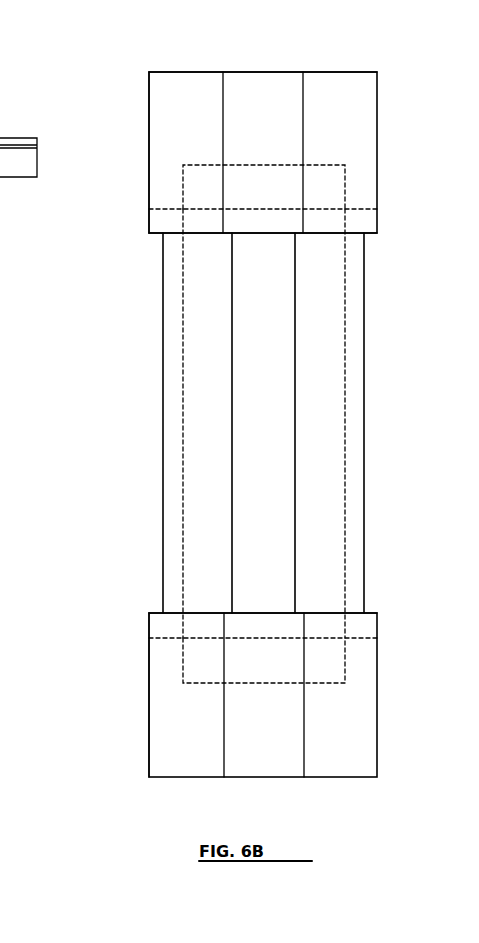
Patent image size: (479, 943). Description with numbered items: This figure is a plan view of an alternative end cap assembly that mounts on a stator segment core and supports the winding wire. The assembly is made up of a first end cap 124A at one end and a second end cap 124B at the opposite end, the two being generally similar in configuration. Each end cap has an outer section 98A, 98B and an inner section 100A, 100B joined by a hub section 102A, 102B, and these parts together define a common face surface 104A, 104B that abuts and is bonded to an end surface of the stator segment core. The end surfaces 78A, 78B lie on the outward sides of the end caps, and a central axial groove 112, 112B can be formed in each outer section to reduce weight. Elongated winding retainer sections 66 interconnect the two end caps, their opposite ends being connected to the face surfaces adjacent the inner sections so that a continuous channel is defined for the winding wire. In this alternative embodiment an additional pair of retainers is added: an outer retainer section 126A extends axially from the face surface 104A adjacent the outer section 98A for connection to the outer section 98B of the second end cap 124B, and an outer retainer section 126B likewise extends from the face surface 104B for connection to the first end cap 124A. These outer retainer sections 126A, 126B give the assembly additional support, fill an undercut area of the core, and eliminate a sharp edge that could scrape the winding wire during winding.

The end surface 78A is at (176, 73).
The end surface 78B is at (37, 162).
The outer section 98A is at (360, 145).
The outer section 98B is at (363, 710).
The central axial groove 112 is at (240, 105).
The central axial groove 112B is at (263, 760).
The inner section 100A is at (183, 177).
The inner section 100B is at (183, 662).
The hub section 102A is at (270, 218).
The hub section 102B is at (265, 623).
The common face surface 104A is at (362, 235).
The common face surface 104B is at (347, 613).
The first end cap 124A is at (115, 112).
The second end cap 124B is at (131, 729).
The outer retainer section 126A is at (228, 398).
The outer retainer section 126B is at (341, 398).
The retainer sections 66 is at (180, 436).